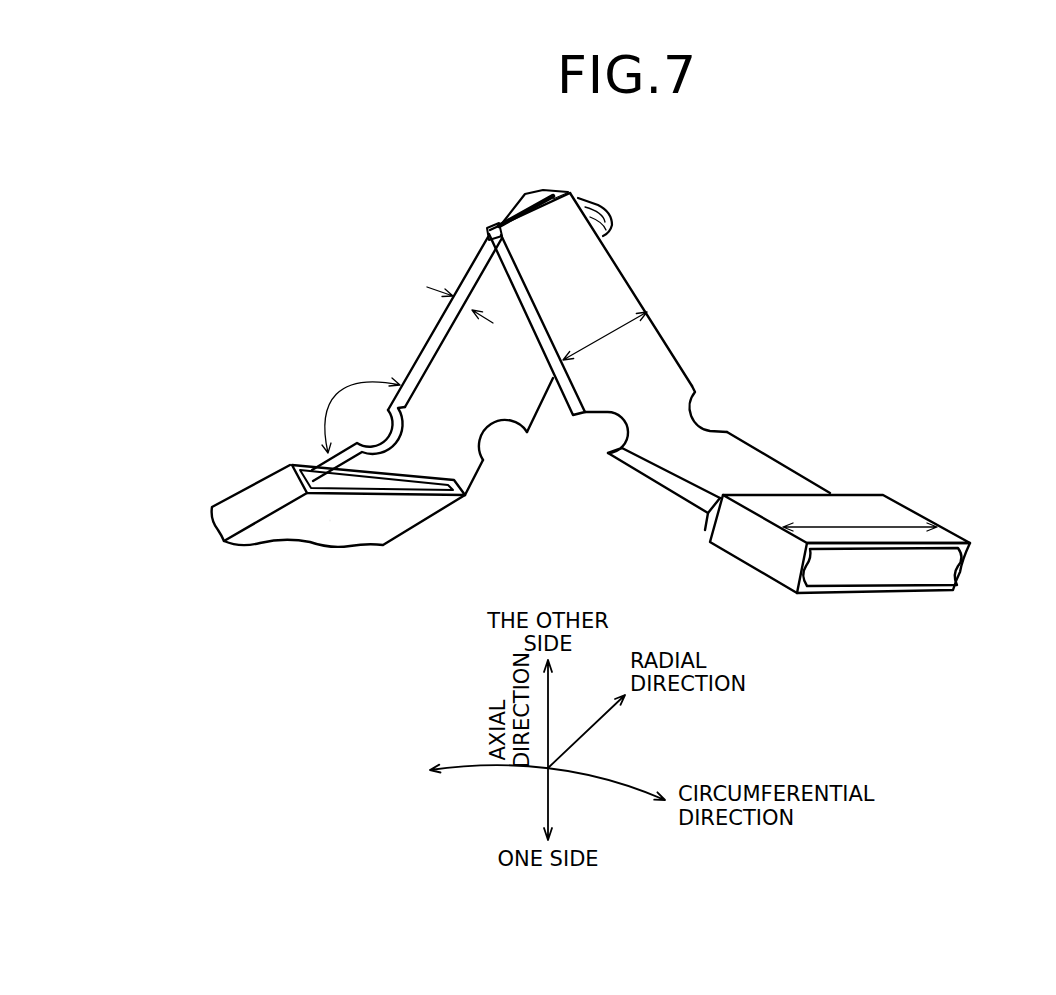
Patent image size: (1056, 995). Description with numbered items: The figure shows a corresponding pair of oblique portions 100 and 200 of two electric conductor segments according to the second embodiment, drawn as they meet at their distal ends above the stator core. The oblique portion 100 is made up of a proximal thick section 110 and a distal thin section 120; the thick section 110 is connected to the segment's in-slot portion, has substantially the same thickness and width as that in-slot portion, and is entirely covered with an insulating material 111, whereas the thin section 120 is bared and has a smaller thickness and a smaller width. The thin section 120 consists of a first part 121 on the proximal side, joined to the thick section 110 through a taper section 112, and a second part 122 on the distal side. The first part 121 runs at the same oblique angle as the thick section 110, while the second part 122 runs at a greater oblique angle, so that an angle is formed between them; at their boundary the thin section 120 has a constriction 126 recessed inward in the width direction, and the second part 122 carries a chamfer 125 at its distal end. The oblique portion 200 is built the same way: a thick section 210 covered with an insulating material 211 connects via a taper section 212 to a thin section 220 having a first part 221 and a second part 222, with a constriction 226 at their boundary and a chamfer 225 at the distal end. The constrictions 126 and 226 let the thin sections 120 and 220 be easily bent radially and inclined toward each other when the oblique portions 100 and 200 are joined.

The oblique portion 100 is at (373, 327).
The thick section 110 is at (300, 522).
The insulating material 111 is at (330, 483).
The taper section 112 is at (305, 473).
The thin section 120 is at (343, 590).
The first part 121 is at (398, 463).
The second part 122 is at (473, 387).
The chamfer 125 is at (537, 192).
The constriction 126 is at (494, 440).
The oblique portion 200 is at (724, 320).
The thick section 210 is at (780, 567).
The insulating material 211 is at (960, 556).
The taper section 212 is at (713, 510).
The thin section 220 is at (731, 220).
The first part 221 is at (695, 460).
The second part 222 is at (588, 317).
The chamfer 225 is at (565, 192).
The constriction 226 is at (700, 417).